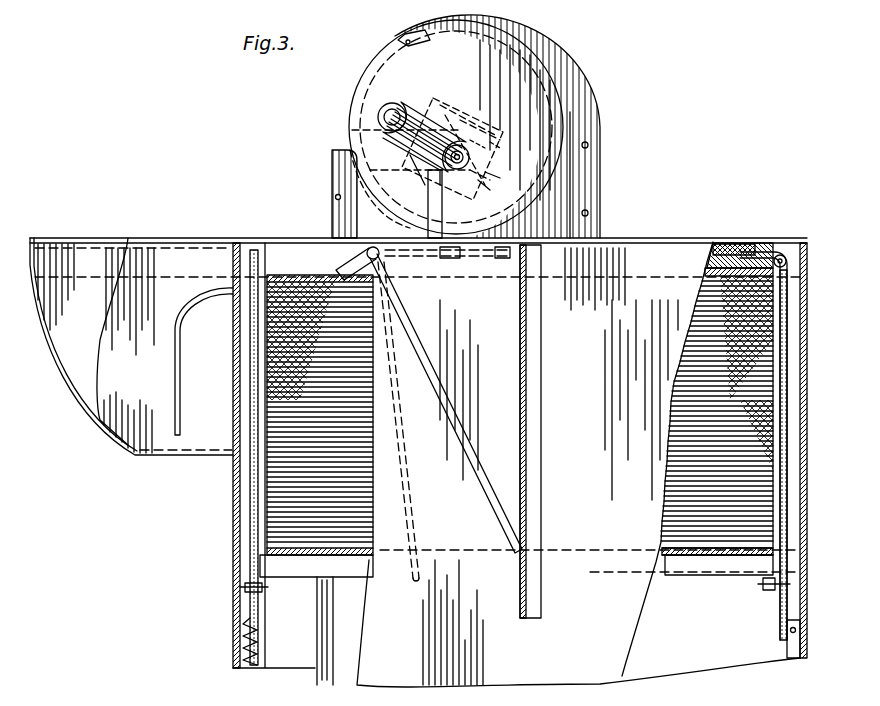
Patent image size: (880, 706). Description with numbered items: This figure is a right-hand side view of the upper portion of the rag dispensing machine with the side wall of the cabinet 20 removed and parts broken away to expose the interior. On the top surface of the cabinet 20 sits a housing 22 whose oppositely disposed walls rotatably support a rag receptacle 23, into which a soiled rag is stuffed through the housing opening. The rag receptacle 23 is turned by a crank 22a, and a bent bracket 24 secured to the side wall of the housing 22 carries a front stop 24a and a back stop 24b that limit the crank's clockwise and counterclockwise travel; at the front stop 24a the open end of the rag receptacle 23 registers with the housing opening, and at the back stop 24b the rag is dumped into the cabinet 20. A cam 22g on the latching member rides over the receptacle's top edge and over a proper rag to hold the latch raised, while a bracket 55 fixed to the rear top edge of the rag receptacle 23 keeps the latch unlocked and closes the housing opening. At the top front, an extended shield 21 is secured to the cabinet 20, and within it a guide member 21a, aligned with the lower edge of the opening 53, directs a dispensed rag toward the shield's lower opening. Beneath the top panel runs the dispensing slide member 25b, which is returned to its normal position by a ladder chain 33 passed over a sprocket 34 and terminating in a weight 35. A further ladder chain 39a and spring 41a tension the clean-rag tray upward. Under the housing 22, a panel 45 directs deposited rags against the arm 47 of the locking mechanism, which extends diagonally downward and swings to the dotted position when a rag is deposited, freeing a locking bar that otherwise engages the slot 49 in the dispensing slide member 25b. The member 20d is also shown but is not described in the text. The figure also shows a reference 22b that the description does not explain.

The cabinet 20 is at (233, 512).
The drain pipe 20d is at (317, 672).
The extended shield 21 is at (72, 412).
The guide member 21a is at (176, 393).
The housing 22 is at (600, 110).
The crank 22a is at (392, 100).
The mounting tab 22b is at (400, 80).
The cam 22g is at (558, 45).
The rag receptacle 23 is at (458, 102).
The bracket 24 is at (440, 205).
The front stop 24a is at (385, 138).
The back stop 24b is at (443, 215).
The dispensing slide member 25b is at (735, 244).
The ladder chain 33 is at (781, 252).
The sprocket 34 is at (715, 243).
The weight 35 is at (793, 658).
The ladder chain 39a is at (250, 556).
The spring 41a is at (243, 640).
The panel 45 is at (520, 606).
The arm 47 is at (502, 515).
The slot 49 is at (372, 588).
The opening 53 is at (235, 265).
The bracket 55 is at (332, 197).